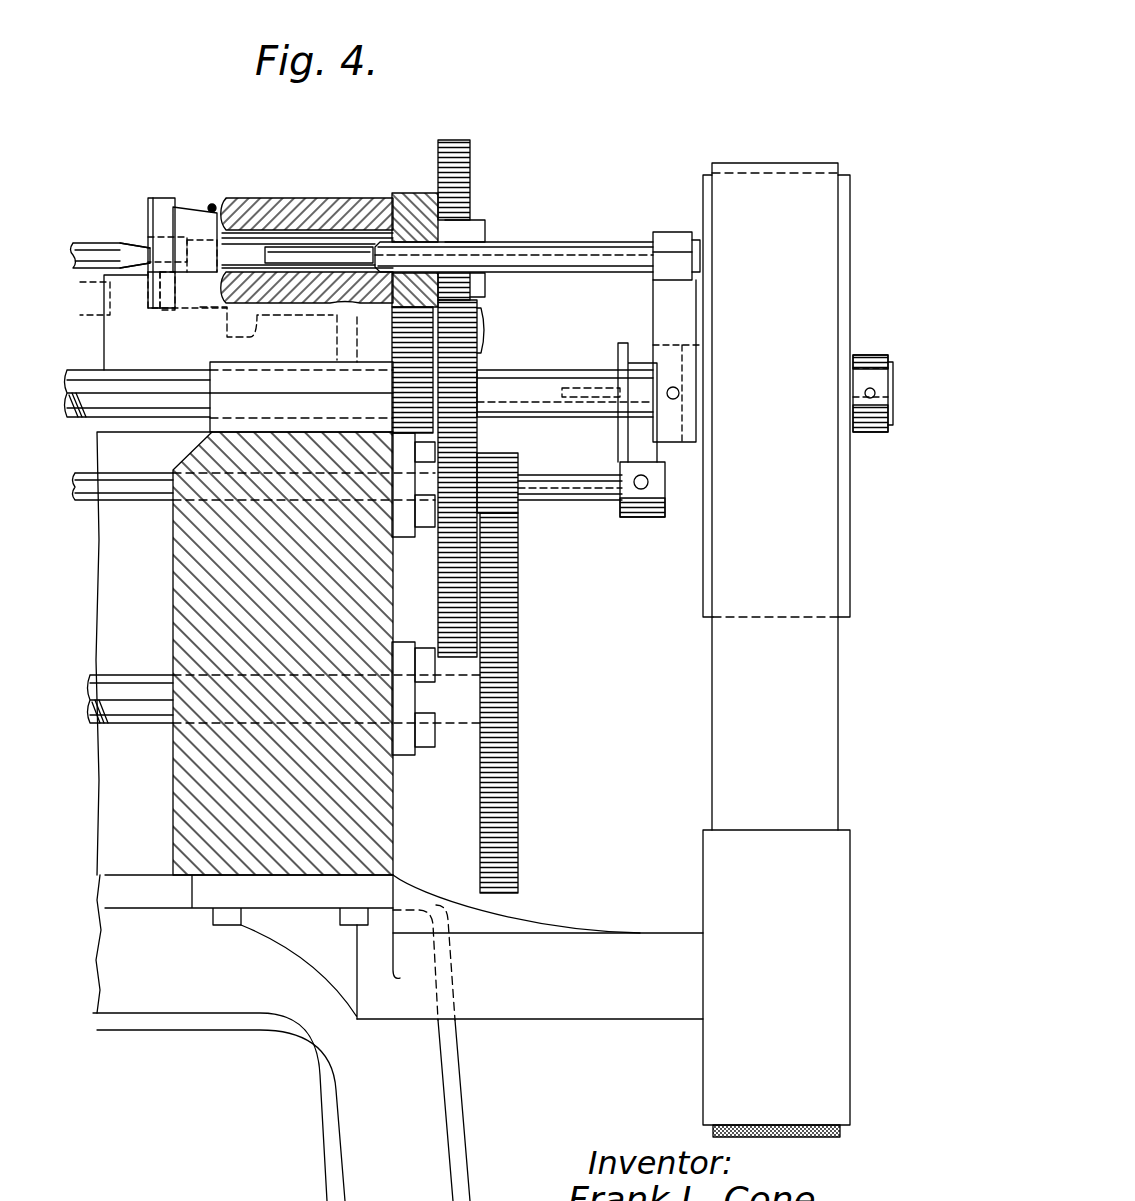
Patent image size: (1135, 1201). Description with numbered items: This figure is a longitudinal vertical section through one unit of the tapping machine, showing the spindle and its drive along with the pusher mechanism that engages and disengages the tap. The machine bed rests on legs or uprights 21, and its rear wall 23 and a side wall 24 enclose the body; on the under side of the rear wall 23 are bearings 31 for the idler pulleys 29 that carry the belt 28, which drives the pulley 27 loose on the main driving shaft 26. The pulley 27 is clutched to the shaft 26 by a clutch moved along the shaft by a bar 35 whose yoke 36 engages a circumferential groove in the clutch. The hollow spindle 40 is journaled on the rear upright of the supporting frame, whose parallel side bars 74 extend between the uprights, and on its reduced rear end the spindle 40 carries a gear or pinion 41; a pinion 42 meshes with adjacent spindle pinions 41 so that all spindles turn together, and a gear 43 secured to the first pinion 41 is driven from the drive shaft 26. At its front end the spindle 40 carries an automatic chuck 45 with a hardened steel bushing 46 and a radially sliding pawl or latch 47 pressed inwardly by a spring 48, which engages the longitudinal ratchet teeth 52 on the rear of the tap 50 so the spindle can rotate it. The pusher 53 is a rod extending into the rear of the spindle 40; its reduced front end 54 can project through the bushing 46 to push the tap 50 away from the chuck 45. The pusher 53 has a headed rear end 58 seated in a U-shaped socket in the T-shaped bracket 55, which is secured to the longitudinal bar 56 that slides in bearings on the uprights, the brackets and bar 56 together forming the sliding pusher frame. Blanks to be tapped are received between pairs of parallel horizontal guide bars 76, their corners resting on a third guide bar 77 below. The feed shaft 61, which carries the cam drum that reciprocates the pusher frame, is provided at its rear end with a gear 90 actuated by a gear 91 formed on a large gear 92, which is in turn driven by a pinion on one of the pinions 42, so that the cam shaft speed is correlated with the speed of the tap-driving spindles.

The legs or uprights 21 is at (366, 1038).
The rear wall 23 is at (173, 577).
The side wall 24 is at (98, 613).
The main driving shaft 26 is at (885, 433).
The pulley 27 is at (798, 502).
The belt 28 is at (830, 163).
The idler pulleys 29 is at (715, 858).
The bearings 31 is at (608, 955).
The bar 35 is at (580, 495).
The yoke 36 is at (648, 517).
The spindle 40 is at (333, 225).
The gear or pinion 41 is at (407, 213).
The pinion 42 is at (395, 322).
The gear 43 is at (470, 168).
The automatic chuck 45 is at (192, 222).
The hardened steel bushing 46 is at (162, 303).
The pawl or latch 47 is at (162, 196).
The spring 48 is at (183, 203).
The tap 50 is at (127, 240).
The ratchet teeth 52 is at (142, 277).
The pusher 53 is at (555, 248).
The reduced front end 54 is at (285, 250).
The T-shaped bracket 55 is at (665, 303).
The longitudinal bar 56 is at (538, 382).
The headed rear end 58 is at (672, 252).
The feed shaft 61 is at (128, 725).
The side bars 74 is at (104, 345).
The guide bars 76 is at (80, 243).
The guide bar 77 is at (66, 288).
The gear 90 is at (520, 642).
The gear 91 is at (520, 458).
The large gear 92 is at (445, 545).